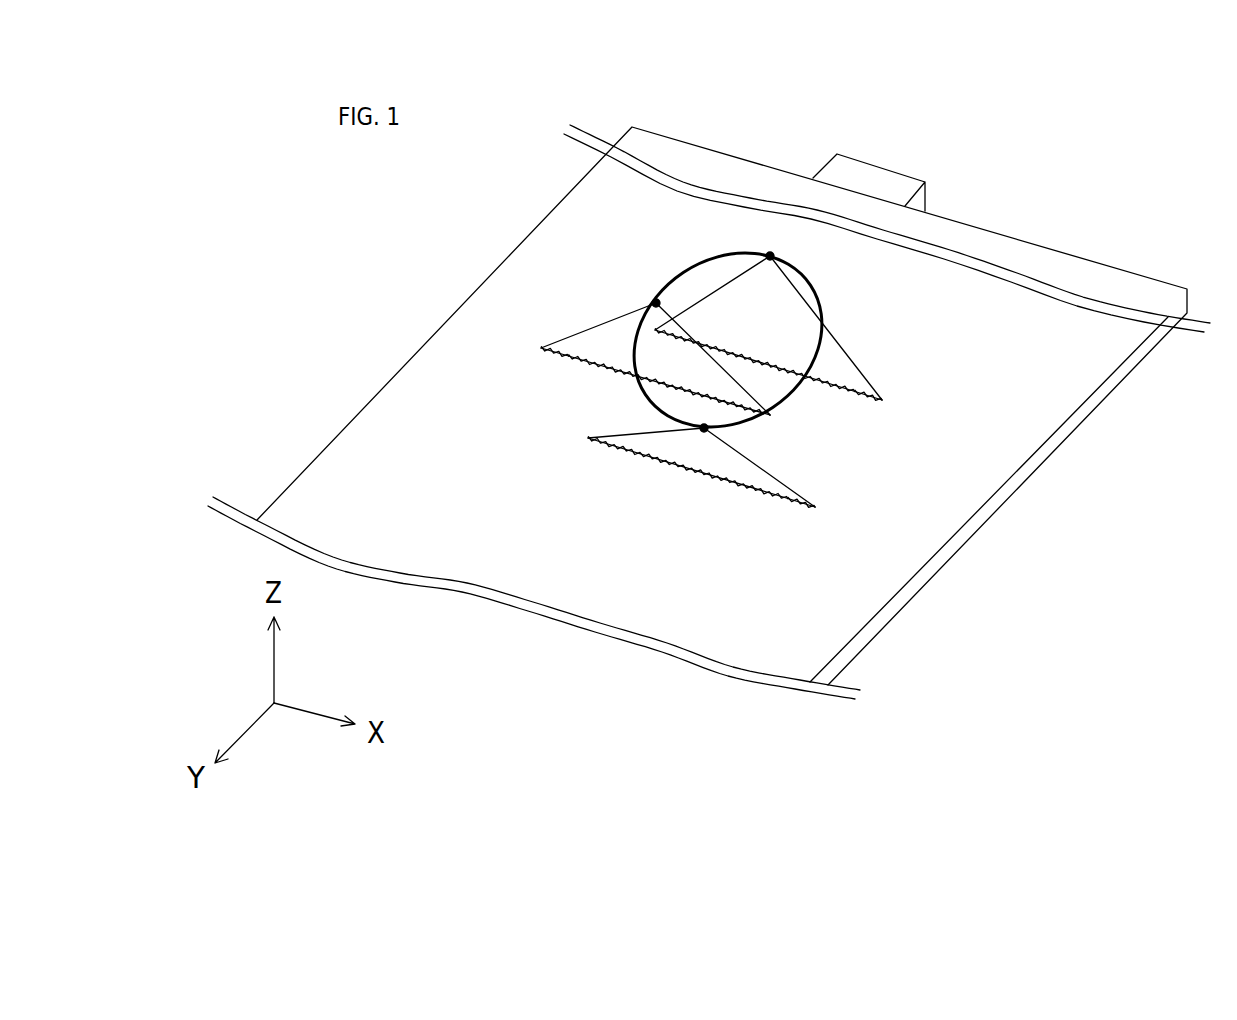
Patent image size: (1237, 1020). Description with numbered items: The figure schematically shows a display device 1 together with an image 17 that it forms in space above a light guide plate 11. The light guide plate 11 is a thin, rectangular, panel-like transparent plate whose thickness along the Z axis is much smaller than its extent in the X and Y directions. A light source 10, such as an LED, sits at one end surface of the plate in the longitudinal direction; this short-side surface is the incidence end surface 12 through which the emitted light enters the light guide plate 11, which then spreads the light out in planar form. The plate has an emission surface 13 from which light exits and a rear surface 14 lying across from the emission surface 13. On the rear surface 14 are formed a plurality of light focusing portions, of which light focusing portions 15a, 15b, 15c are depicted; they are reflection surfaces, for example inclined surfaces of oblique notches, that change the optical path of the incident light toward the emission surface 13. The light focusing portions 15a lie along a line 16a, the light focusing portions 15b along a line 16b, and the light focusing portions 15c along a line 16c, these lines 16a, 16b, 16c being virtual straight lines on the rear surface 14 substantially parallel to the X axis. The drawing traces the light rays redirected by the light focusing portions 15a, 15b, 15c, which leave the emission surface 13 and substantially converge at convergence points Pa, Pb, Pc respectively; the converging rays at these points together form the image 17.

The display device 1 is at (1213, 114).
The light source 10 is at (880, 182).
The light guide plate 11 is at (1068, 390).
The incidence end surface 12 is at (1043, 247).
The emission surface 13 is at (980, 477).
The rear surface 14 is at (835, 645).
The light focusing portion 15a is at (858, 398).
The light focusing portion 15b is at (567, 357).
The light focusing portion 15c is at (775, 497).
The line 16a is at (882, 400).
The line 16b is at (541, 348).
The line 16c is at (815, 505).
The image 17 is at (819, 284).
The convergence point Pa is at (770, 256).
The convergence point Pb is at (656, 303).
The convergence point Pc is at (704, 428).